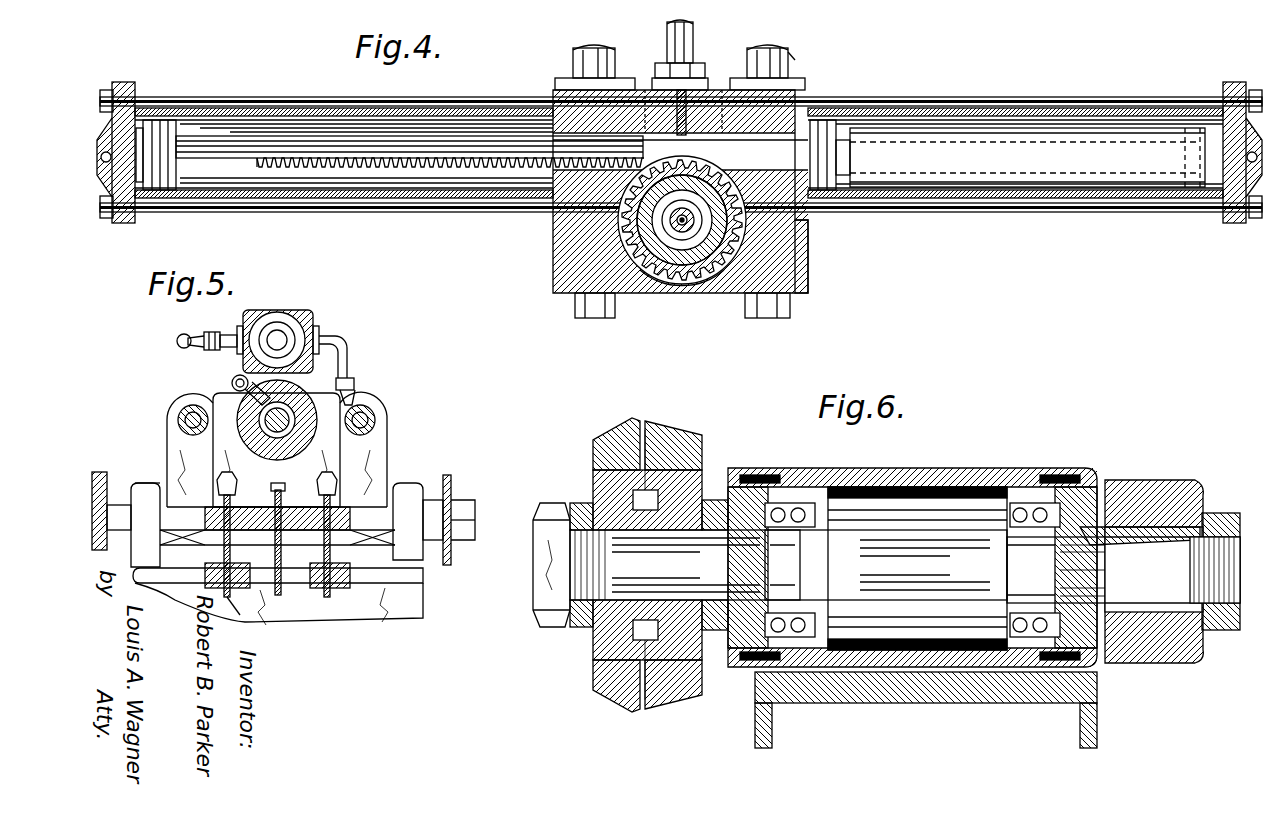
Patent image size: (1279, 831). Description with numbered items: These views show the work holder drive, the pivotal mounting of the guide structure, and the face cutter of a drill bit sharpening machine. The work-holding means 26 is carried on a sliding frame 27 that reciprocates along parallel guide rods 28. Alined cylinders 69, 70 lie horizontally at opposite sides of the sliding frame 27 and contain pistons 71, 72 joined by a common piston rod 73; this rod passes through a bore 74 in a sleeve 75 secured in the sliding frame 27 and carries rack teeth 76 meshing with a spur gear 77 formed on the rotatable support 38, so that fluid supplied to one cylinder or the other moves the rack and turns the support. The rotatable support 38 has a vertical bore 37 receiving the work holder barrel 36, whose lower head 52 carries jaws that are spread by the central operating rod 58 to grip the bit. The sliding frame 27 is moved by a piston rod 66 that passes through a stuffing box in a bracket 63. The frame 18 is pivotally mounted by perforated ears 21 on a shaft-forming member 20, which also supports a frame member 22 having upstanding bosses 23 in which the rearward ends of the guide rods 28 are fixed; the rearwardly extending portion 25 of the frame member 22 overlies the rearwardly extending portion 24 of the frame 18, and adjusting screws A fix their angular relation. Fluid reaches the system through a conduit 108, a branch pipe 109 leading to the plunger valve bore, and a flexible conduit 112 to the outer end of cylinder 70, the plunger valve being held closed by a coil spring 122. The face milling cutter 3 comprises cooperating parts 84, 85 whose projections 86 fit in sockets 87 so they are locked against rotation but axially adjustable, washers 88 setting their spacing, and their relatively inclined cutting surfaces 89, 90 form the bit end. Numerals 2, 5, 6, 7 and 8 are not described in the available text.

In FIG. 4, the bolt 2 is at (802, 60).
In FIG. 5, the bolt 2 is at (375, 418).
In FIG. 6, the face milling cutter 3 is at (644, 565).
In FIG. 6, the nut 5 is at (565, 625).
In FIG. 6, the motor armature 6 is at (890, 540).
In FIG. 6, the motor housing 7 is at (955, 470).
In FIG. 6, the coupling collar 8 is at (1138, 480).
In FIG. 5, the frame 18 is at (423, 583).
In FIG. 5, the shaft-forming member 20 is at (104, 472).
In FIG. 5, the perforated ears 21 is at (140, 483).
In FIG. 5, the frame member 22 is at (205, 530).
In FIG. 5, the upstanding bosses 23 is at (175, 470).
In FIG. 5, the rearwardly extending portion 24 is at (400, 600).
In FIG. 5, the rearwardly extending portion 25 is at (292, 600).
In FIG. 4, the work-holding means 26 is at (553, 278).
In FIG. 4, the sliding frame 27 is at (795, 255).
In FIG. 4, the guide rods 28 is at (573, 62).
In FIG. 5, the guide rods 28 is at (180, 415).
In FIG. 4, the work holder barrel 36 is at (718, 270).
In FIG. 4, the vertical bore 37 is at (712, 226).
In FIG. 4, the rotatable support 38 is at (675, 232).
In FIG. 4, the lower head 52 is at (687, 232).
In FIG. 4, the operating rod 58 is at (652, 282).
In FIG. 5, the bracket 63 is at (340, 462).
In FIG. 4, the piston rod 66 is at (667, 28).
In FIG. 5, the piston rod 66 is at (277, 432).
In FIG. 4, the cylinder 69 is at (285, 108).
In FIG. 4, the cylinder 70 is at (975, 108).
In FIG. 4, the piston 71 is at (168, 205).
In FIG. 4, the piston 72 is at (840, 108).
In FIG. 4, the piston rod 73 is at (430, 138).
In FIG. 4, the bore 74 is at (645, 88).
In FIG. 4, the sleeve 75 is at (722, 88).
In FIG. 4, the rack teeth 76 is at (395, 170).
In FIG. 4, the spur gear 77 is at (625, 230).
In FIG. 6, the cutter part 84 is at (593, 485).
In FIG. 6, the cutter part 85 is at (722, 498).
In FIG. 6, the projections 86 is at (660, 470).
In FIG. 6, the sockets 87 is at (600, 478).
In FIG. 6, the washers 88 is at (600, 650).
In FIG. 6, the cutting surface 89 is at (612, 430).
In FIG. 6, the cutting surface 90 is at (648, 418).
In FIG. 5, the conduit 108 is at (235, 378).
In FIG. 5, the branch pipe 109 is at (218, 332).
In FIG. 5, the flexible conduit 112 is at (356, 384).
In FIG. 5, the coil spring 122 is at (313, 322).
In FIG. 5, the adjusting screw A is at (240, 612).